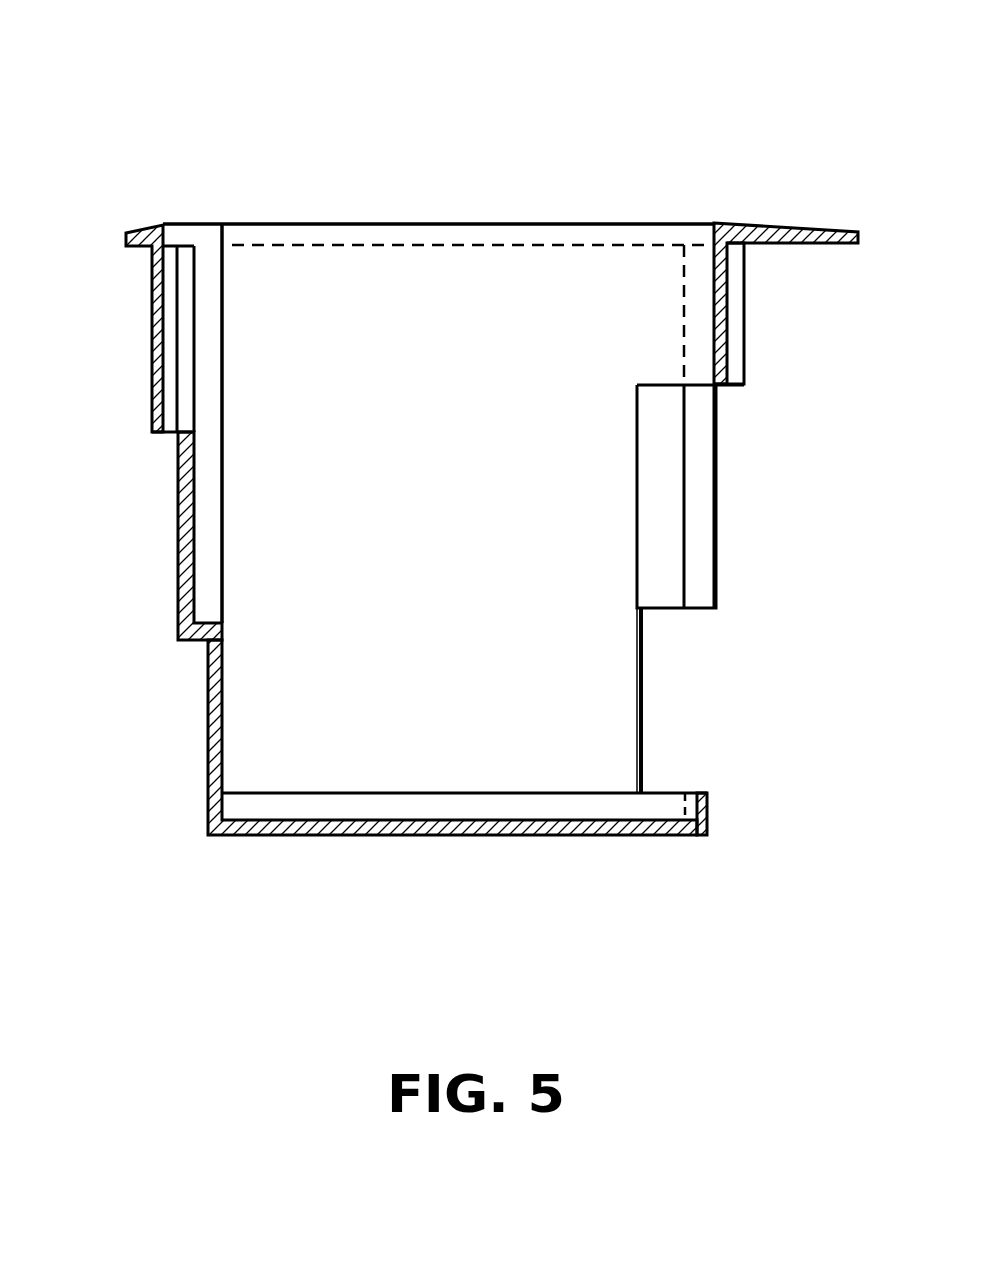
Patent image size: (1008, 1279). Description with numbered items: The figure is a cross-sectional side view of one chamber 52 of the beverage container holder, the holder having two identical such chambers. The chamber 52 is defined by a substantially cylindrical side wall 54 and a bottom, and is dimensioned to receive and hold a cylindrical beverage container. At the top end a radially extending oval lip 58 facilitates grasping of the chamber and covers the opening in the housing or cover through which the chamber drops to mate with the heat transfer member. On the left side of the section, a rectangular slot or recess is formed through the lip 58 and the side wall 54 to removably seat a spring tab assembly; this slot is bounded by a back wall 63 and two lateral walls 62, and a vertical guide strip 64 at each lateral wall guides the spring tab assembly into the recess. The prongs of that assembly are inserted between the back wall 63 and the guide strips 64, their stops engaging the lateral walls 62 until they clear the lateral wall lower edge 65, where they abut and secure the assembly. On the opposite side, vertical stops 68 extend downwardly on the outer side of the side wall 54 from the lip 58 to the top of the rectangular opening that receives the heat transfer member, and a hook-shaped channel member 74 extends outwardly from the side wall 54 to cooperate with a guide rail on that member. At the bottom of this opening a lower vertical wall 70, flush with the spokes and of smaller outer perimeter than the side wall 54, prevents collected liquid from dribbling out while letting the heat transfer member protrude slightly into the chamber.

The chamber 52 is at (404, 202).
The lip 58 is at (760, 222).
The vertical stops 68 is at (733, 325).
The channel member 74 is at (702, 533).
The back wall 63 is at (153, 372).
The vertical guide strip 64 is at (183, 288).
The lateral wall lower edge 65 is at (164, 436).
The lateral wall 62 is at (208, 508).
The side wall 54 is at (215, 717).
The lower vertical wall 70 is at (707, 812).